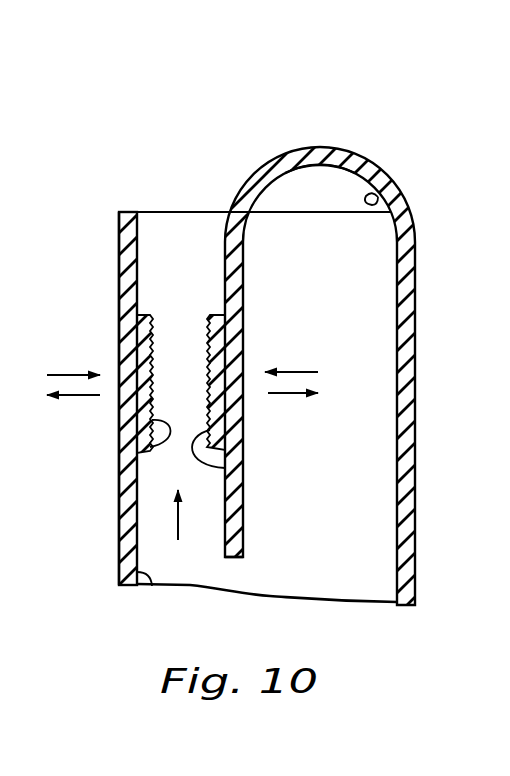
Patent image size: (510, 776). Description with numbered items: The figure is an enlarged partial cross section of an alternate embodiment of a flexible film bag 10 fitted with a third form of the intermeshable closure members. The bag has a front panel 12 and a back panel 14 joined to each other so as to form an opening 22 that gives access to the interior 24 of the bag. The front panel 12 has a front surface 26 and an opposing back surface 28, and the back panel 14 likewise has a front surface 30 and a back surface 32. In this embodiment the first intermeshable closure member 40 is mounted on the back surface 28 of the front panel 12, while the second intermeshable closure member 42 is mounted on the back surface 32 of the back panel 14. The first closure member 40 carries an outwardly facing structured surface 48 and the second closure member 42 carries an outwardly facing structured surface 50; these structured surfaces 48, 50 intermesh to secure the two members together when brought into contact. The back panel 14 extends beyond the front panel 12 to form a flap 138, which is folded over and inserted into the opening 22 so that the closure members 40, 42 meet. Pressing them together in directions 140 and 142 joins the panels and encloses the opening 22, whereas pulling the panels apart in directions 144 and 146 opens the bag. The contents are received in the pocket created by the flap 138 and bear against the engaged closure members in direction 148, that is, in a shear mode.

The bag 10 is at (237, 146).
The front panel 12 is at (123, 552).
The back panel 14 is at (357, 167).
The opening 22 is at (185, 238).
The interior 24 is at (295, 582).
The front surface 26 is at (121, 508).
The back surface 28 is at (152, 586).
The front surface 30 is at (380, 197).
The back surface 32 is at (306, 152).
The first intermeshable closure member 40 is at (228, 323).
The second intermeshable closure member 42 is at (138, 321).
The outwardly facing structured surface 48 is at (225, 468).
The outwardly facing structured surface 50 is at (150, 447).
The flap 138 is at (247, 556).
The direction 140 is at (298, 371).
The direction 142 is at (67, 374).
The direction 144 is at (290, 395).
The direction 146 is at (75, 397).
The direction 148 is at (178, 530).